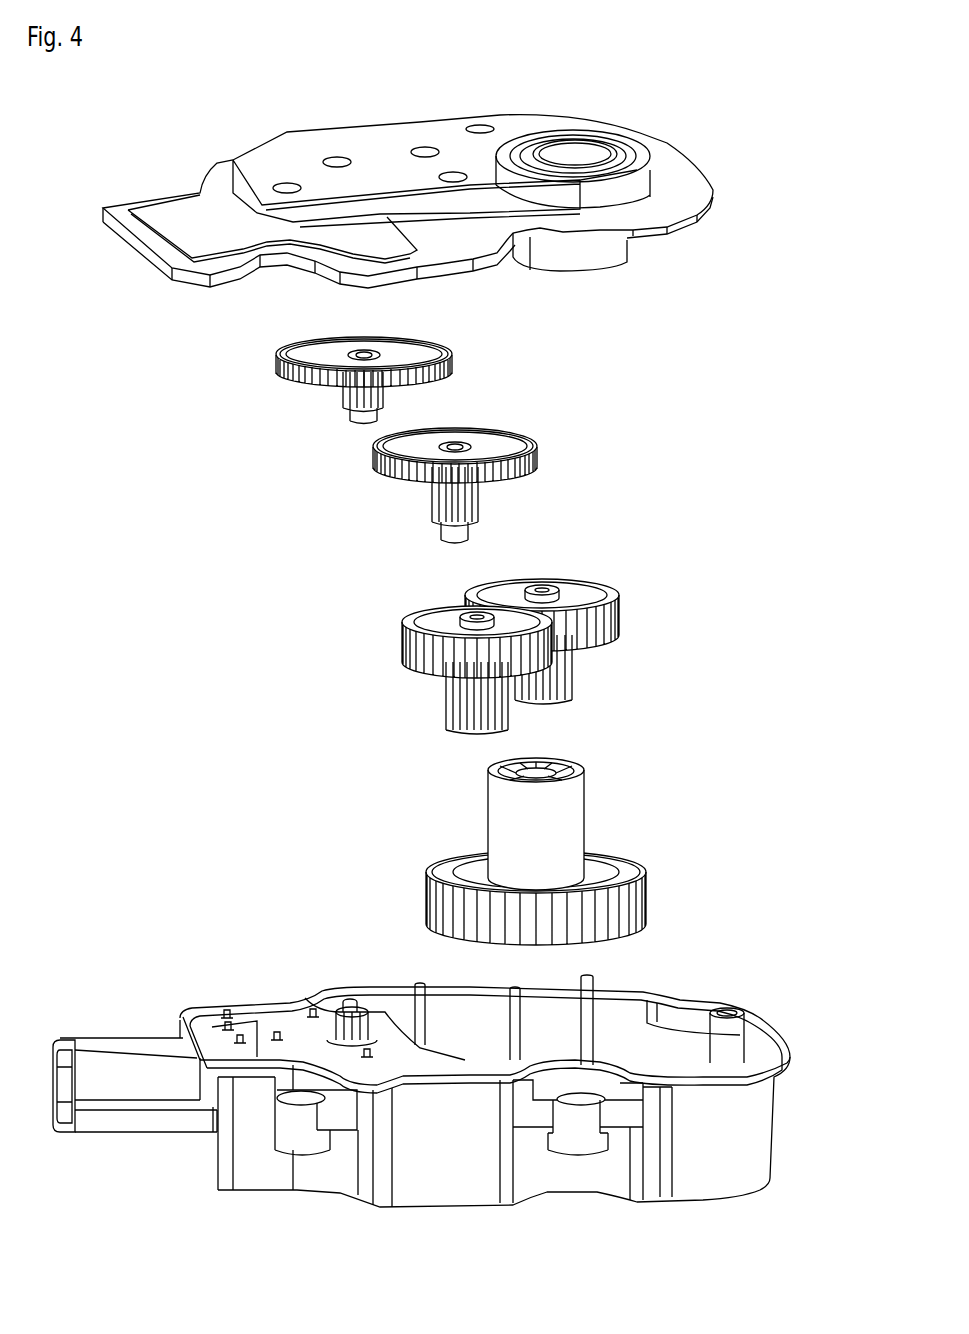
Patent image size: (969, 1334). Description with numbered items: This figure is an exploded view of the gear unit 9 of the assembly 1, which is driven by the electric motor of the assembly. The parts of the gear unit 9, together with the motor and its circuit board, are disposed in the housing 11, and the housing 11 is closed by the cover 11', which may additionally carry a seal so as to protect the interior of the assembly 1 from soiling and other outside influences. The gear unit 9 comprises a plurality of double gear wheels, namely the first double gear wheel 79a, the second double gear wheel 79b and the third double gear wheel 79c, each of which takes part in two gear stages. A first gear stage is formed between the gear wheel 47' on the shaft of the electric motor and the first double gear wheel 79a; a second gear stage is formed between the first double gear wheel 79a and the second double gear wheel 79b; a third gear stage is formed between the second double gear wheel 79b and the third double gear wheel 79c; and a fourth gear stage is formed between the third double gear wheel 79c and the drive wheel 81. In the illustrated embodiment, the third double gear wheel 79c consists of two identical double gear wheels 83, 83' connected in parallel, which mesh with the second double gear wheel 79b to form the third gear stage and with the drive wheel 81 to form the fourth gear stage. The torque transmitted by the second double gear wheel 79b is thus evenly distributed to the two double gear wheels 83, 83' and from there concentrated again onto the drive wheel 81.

The assembly 1 is at (198, 156).
The cover 11' is at (502, 196).
The gear unit 9 is at (688, 352).
The first double gear wheel 79a is at (468, 367).
The second double gear wheel 79b is at (552, 458).
The third double gear wheel 79c is at (640, 623).
The double gear wheel 83 is at (634, 606).
The double gear wheel 83' is at (391, 670).
The drive wheel 81 is at (583, 807).
The gear wheel 47' is at (301, 983).
The housing 11 is at (421, 1069).